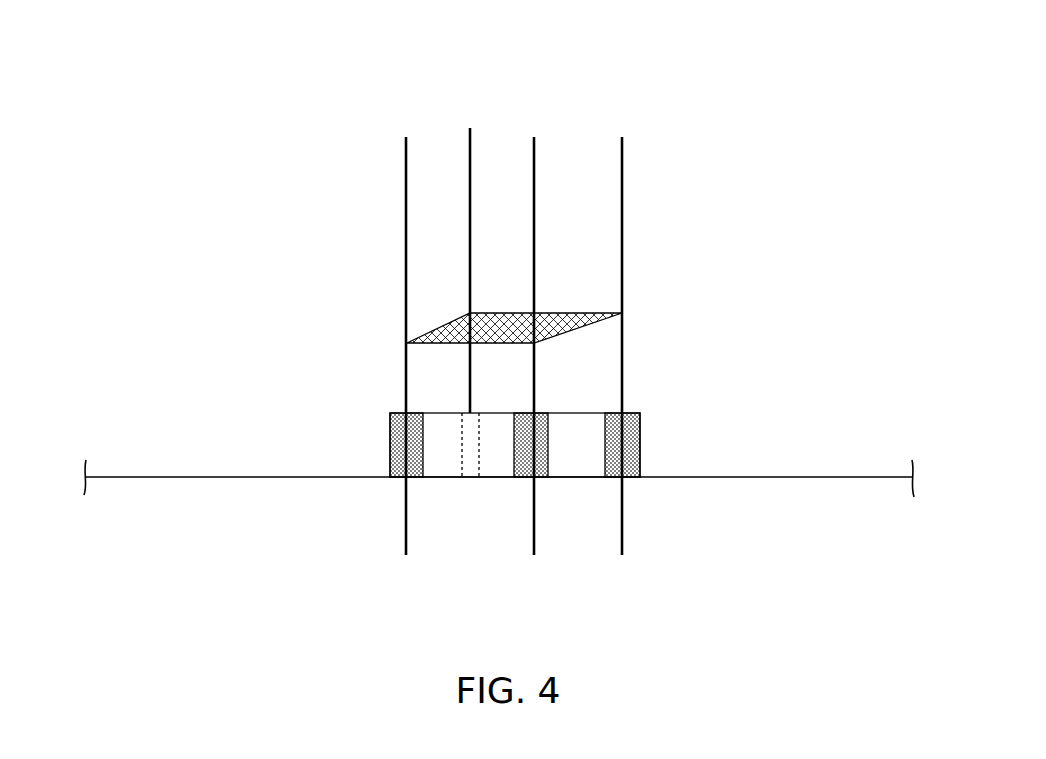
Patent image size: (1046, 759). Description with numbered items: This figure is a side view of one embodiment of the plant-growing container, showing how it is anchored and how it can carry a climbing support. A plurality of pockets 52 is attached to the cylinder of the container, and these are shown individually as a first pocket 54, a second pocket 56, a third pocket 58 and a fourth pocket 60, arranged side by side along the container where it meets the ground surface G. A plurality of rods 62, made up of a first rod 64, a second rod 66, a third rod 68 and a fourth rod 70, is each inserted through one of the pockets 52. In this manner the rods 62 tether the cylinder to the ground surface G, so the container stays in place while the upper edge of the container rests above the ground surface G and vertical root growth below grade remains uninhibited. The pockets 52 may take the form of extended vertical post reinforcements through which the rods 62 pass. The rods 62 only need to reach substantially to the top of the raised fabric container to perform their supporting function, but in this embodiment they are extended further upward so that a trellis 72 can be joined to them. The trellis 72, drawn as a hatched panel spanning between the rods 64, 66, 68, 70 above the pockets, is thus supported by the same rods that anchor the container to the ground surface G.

The plurality of pockets 52 is at (515, 492).
The first pocket 54 is at (392, 433).
The second pocket 56 is at (472, 412).
The third pocket 58 is at (537, 413).
The fourth pocket 60 is at (627, 413).
The plurality of rods 62 is at (432, 108).
The first rod 64 is at (406, 203).
The second rod 66 is at (470, 203).
The third rod 68 is at (534, 203).
The fourth rod 70 is at (622, 203).
The trellis 72 is at (578, 312).
The ground surface G is at (816, 477).